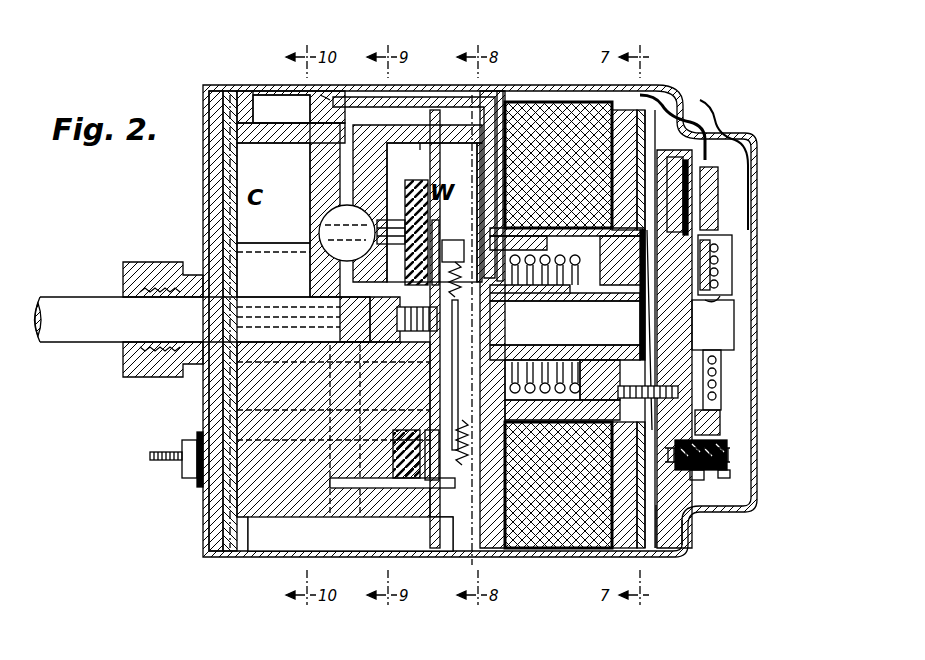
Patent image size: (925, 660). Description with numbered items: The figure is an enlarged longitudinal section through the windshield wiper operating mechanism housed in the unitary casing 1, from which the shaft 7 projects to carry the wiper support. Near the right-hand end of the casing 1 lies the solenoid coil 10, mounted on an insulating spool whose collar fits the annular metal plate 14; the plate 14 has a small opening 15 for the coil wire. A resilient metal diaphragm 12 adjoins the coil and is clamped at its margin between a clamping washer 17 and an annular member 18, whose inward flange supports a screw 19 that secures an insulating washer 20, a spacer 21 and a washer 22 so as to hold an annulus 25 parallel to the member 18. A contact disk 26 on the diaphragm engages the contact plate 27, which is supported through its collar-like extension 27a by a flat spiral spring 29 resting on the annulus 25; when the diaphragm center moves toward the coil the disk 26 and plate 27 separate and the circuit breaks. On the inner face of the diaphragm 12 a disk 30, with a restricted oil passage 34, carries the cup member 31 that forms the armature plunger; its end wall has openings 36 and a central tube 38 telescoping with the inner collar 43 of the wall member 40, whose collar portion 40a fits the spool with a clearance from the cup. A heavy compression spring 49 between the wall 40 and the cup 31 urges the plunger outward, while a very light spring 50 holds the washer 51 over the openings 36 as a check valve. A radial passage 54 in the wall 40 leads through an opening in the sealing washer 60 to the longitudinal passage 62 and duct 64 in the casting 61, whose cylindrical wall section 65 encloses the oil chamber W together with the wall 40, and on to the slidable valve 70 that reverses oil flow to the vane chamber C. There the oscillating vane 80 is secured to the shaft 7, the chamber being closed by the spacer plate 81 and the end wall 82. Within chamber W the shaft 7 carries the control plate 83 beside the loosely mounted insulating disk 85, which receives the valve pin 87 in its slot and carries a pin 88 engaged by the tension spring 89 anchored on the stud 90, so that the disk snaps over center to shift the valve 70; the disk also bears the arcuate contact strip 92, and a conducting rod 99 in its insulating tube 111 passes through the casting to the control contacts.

The casing 1 is at (250, 555).
The shaft 7 is at (75, 330).
The solenoid coil 10 is at (560, 545).
The diaphragm 12 is at (652, 470).
The annular metal plate 14 is at (640, 545).
The opening 15 is at (650, 100).
The clamping washer 17 is at (655, 548).
The annular member 18 is at (675, 545).
The screw 19 is at (735, 450).
The insulating washer 20 is at (690, 165).
The spacer 21 is at (692, 480).
The washer 22 is at (729, 485).
The annulus 25 is at (720, 420).
The contact disk 26 is at (692, 318).
The contact plate 27 is at (715, 237).
The collar-like extension 27a is at (722, 296).
The flat spiral spring 29 is at (718, 385).
The disk 30 is at (648, 350).
The cup member 31 is at (591, 390).
The restricted passage 34 is at (650, 270).
The openings 36 is at (565, 335).
The tube 38 is at (553, 340).
The wall member 40 is at (497, 550).
The collar portion 40a is at (539, 385).
The inner collar 43 is at (490, 296).
The coiled compression spring 49 is at (510, 385).
The light coil spring 50 is at (565, 290).
The annular washer 51 is at (608, 262).
The radial passage 54 is at (490, 165).
The sealing washer 60 is at (437, 550).
The casting 61 is at (320, 100).
The longitudinal passage 62 is at (414, 187).
The duct 64 is at (345, 170).
The cylindrical wall section 65 is at (419, 156).
The slidable valve 70 is at (325, 228).
The oscillating vane 80 is at (273, 270).
The spacer plate 81 is at (228, 147).
The end wall 82 is at (208, 505).
The control plate 83 is at (439, 227).
The insulating disk 85 is at (405, 192).
The pin 87 is at (391, 232).
The pin 88 is at (453, 268).
The tension spring 89 is at (455, 470).
The stud 90 is at (350, 488).
The arcuate contact strip 92 is at (400, 478).
The conducting rod 99 is at (150, 458).
The insulating tube 111 is at (196, 440).